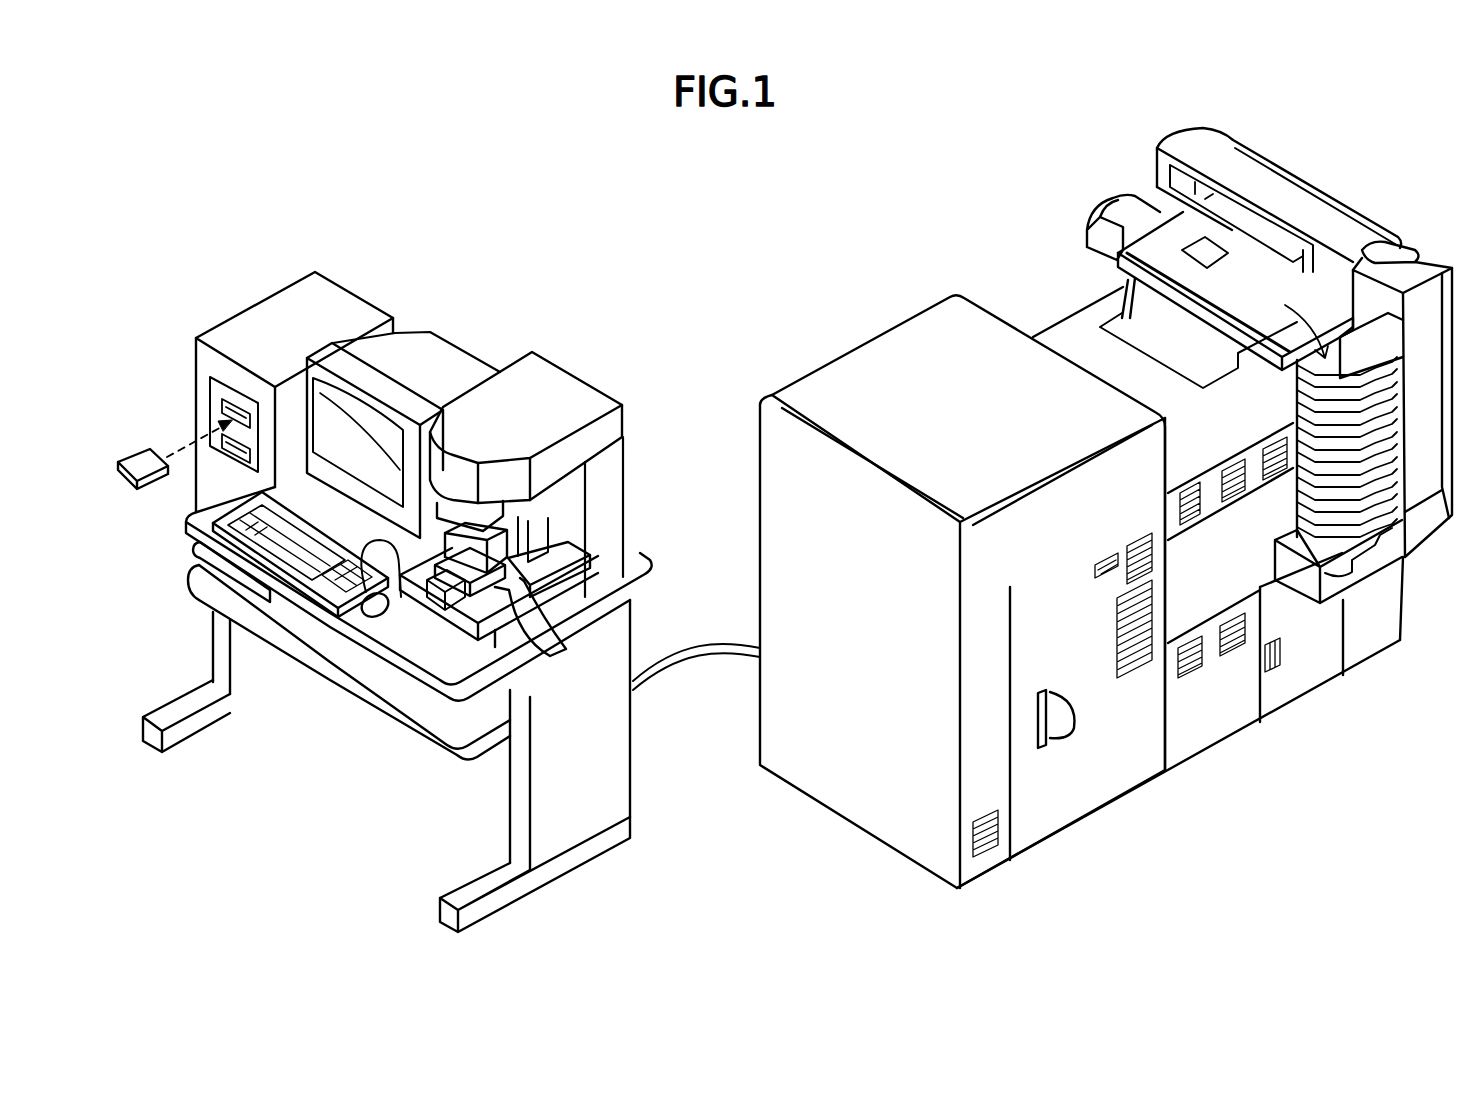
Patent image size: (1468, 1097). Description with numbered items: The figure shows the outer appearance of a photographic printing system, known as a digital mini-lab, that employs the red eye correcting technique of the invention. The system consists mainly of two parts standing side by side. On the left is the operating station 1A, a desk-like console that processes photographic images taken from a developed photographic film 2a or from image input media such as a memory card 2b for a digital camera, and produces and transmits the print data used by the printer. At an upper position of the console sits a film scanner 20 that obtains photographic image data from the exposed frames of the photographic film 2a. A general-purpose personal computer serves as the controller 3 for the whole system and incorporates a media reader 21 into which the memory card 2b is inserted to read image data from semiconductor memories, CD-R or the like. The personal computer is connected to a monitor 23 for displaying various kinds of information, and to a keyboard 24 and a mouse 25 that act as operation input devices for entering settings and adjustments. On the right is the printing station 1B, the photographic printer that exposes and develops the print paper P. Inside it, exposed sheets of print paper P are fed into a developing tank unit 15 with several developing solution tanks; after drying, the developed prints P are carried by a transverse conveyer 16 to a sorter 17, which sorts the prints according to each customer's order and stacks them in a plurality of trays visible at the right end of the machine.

The operating station 1A is at (508, 323).
The printing station 1B is at (858, 325).
The controller 3 is at (274, 318).
The media reader 21 is at (212, 407).
The memory card 2b is at (130, 490).
The monitor 23 is at (428, 347).
The film scanner 20 is at (552, 390).
The photographic film 2a is at (552, 655).
The keyboard 24 is at (312, 578).
The mouse 25 is at (367, 610).
The developing tank unit 15 is at (1227, 695).
The transverse conveyer 16 is at (1152, 243).
The print paper P is at (1207, 257).
The sorter 17 is at (1412, 247).